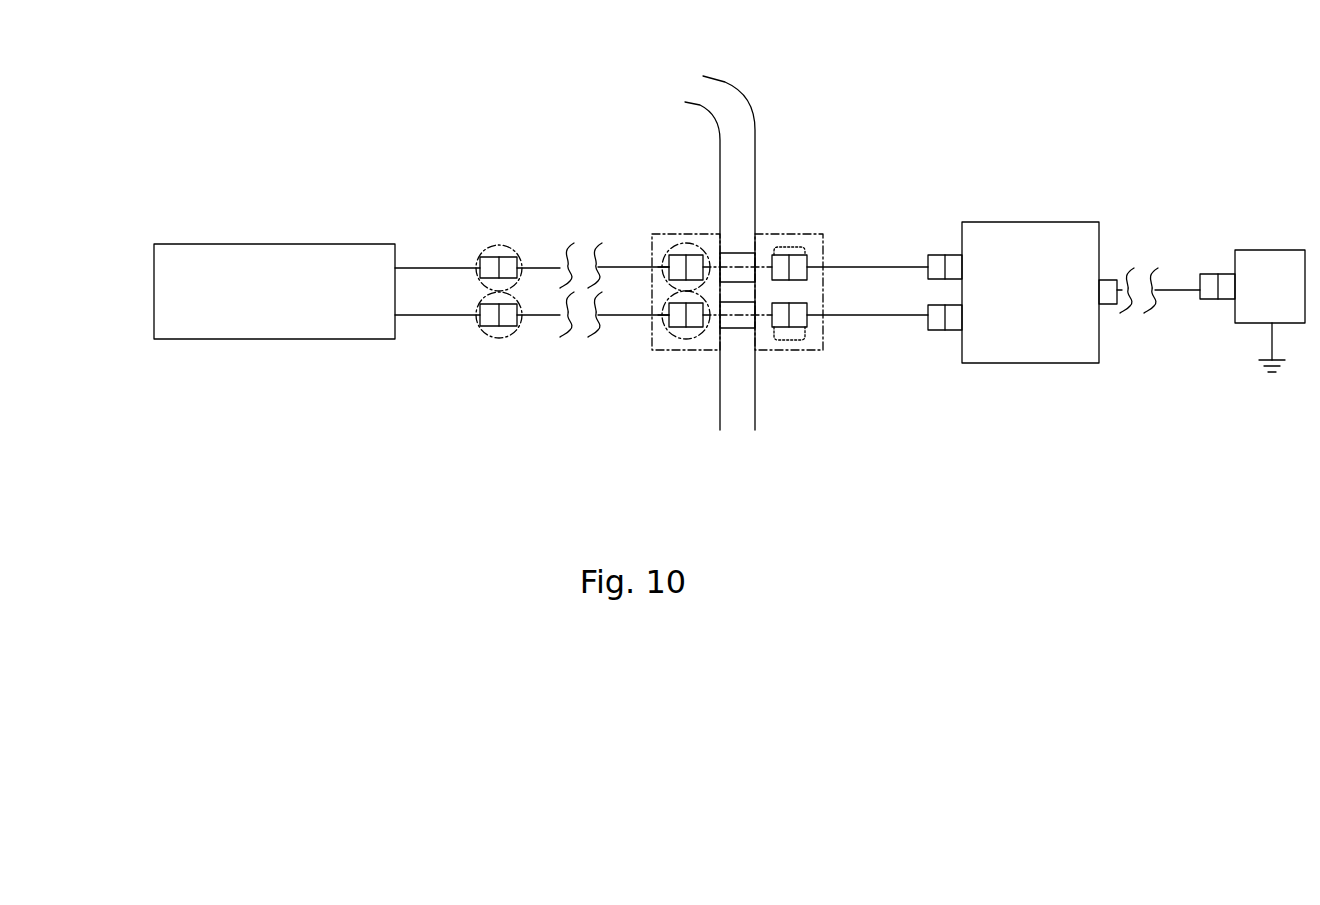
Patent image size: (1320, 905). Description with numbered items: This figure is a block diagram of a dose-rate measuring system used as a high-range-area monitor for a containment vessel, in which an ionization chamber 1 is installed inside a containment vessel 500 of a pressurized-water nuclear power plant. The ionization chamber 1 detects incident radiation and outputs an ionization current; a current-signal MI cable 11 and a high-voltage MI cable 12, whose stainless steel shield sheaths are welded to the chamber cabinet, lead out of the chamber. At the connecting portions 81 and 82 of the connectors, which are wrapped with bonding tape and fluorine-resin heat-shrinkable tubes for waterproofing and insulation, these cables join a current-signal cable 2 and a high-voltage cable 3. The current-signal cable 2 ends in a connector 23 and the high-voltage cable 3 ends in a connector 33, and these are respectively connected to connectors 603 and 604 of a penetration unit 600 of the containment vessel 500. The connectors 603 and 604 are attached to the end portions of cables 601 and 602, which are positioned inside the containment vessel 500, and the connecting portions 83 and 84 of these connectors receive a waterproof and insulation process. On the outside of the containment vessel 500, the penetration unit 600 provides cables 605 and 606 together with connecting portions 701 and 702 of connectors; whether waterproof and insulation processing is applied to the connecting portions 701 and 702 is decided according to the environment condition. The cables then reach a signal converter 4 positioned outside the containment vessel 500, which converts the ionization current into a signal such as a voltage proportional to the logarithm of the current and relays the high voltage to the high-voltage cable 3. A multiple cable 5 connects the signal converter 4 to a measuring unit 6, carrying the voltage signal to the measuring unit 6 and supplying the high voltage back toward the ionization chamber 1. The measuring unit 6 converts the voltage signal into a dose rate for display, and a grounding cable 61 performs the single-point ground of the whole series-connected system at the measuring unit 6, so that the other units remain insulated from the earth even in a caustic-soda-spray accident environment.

The ionization chamber 1 is at (205, 244).
The current-signal MI cable 11 is at (427, 268).
The high-voltage MI cable 12 is at (405, 316).
The connecting portion 81 is at (500, 245).
The connecting portion 82 is at (498, 338).
The current-signal cable 2 is at (609, 267).
The high-voltage cable 3 is at (620, 318).
The connector 23 is at (668, 266).
The connector 33 is at (667, 317).
The connecting portion 83 is at (677, 240).
The connecting portion 84 is at (667, 357).
The connector 603 is at (690, 255).
The connector 604 is at (683, 328).
The cable 601 is at (713, 252).
The cable 602 is at (713, 330).
The cable 605 is at (776, 254).
The cable 606 is at (771, 330).
The connecting portion 701 is at (790, 247).
The connecting portion 702 is at (795, 340).
The penetration unit 600 is at (822, 236).
The containment vessel 500 is at (735, 97).
The signal converter 4 is at (1036, 222).
The multiple cable 5 is at (1168, 291).
The measuring unit 6 is at (1272, 250).
The grounding cable 61 is at (1272, 340).